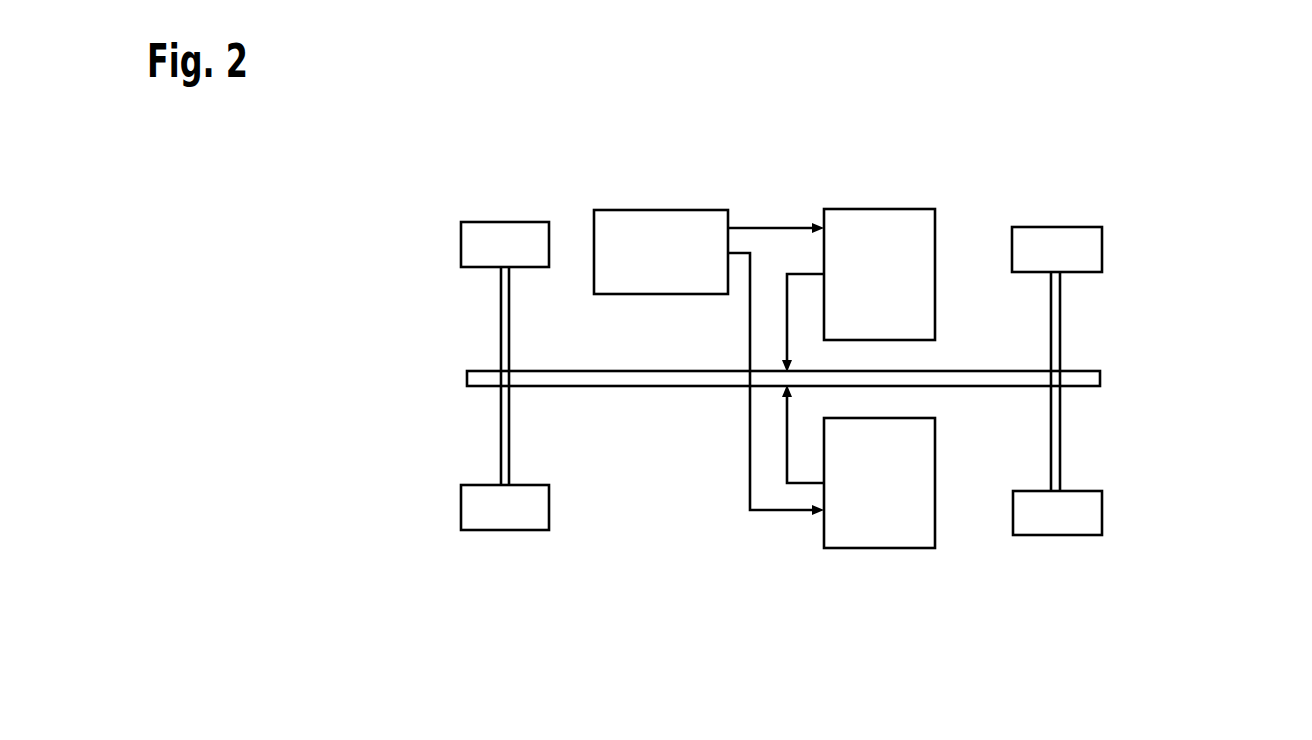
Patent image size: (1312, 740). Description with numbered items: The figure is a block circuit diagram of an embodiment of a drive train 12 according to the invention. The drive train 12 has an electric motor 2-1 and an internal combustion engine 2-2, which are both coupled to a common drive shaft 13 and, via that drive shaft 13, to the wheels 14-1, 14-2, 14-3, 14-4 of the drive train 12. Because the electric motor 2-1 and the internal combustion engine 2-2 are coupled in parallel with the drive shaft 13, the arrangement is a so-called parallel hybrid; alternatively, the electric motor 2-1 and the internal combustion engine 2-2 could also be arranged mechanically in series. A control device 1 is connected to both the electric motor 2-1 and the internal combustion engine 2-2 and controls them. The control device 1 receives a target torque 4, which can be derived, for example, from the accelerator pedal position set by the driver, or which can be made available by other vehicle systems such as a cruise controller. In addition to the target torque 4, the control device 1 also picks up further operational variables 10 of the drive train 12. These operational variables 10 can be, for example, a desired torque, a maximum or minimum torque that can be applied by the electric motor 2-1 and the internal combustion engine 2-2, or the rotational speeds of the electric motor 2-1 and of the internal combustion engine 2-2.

The control device 1 is at (658, 209).
The electric motor 2-1 is at (875, 209).
The internal combustion engine 2-2 is at (878, 548).
The target torque 4 is at (622, 300).
The operational variables 10 is at (695, 300).
The drive train 12 is at (1180, 355).
The drive shaft 13 is at (1089, 388).
The wheel 14-1 is at (505, 222).
The wheel 14-2 is at (505, 530).
The wheel 14-3 is at (1053, 227).
The wheel 14-4 is at (1057, 535).